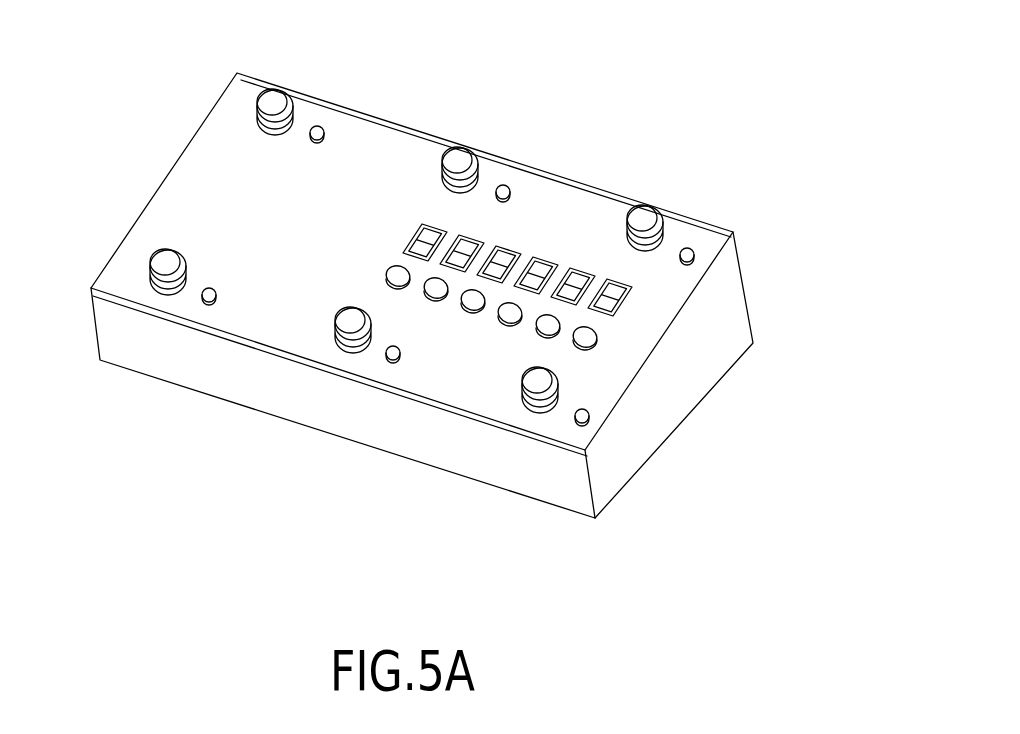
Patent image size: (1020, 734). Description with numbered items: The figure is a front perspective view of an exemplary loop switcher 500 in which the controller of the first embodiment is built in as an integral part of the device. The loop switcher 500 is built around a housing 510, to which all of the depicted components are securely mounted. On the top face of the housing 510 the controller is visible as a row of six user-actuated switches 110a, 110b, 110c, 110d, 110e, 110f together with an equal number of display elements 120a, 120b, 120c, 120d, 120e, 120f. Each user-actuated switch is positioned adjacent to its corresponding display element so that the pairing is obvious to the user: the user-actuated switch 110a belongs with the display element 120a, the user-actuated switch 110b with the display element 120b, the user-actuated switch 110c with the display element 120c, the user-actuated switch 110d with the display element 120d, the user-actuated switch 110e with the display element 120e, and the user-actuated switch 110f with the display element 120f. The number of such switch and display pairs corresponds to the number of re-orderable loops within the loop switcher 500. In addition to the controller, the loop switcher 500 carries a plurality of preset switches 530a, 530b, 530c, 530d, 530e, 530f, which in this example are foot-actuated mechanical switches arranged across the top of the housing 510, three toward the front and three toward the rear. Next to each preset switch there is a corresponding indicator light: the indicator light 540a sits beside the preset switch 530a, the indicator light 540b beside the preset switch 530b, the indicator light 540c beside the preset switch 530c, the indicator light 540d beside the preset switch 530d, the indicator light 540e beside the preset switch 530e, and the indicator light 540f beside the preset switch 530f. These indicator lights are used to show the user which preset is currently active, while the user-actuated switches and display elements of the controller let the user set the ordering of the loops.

The loop switcher 500 is at (435, 295).
The housing 510 is at (160, 187).
The user-actuated switch 110a is at (387, 281).
The user-actuated switch 110b is at (432, 300).
The user-actuated switch 110c is at (470, 312).
The user-actuated switch 110d is at (508, 325).
The user-actuated switch 110e is at (553, 338).
The user-actuated switch 110f is at (597, 343).
The display element 120a is at (428, 222).
The display element 120b is at (470, 235).
The display element 120c is at (509, 247).
The display element 120d is at (545, 259).
The display element 120e is at (584, 269).
The display element 120f is at (622, 311).
The preset switch 530a is at (152, 283).
The preset switch 530b is at (347, 345).
The preset switch 530c is at (543, 405).
The preset switch 530d is at (255, 98).
The preset switch 530e is at (460, 147).
The preset switch 530f is at (652, 207).
The indicator light 540a is at (209, 303).
The indicator light 540b is at (392, 361).
The indicator light 540c is at (583, 424).
The indicator light 540d is at (316, 126).
The indicator light 540e is at (505, 185).
The indicator light 540f is at (690, 249).